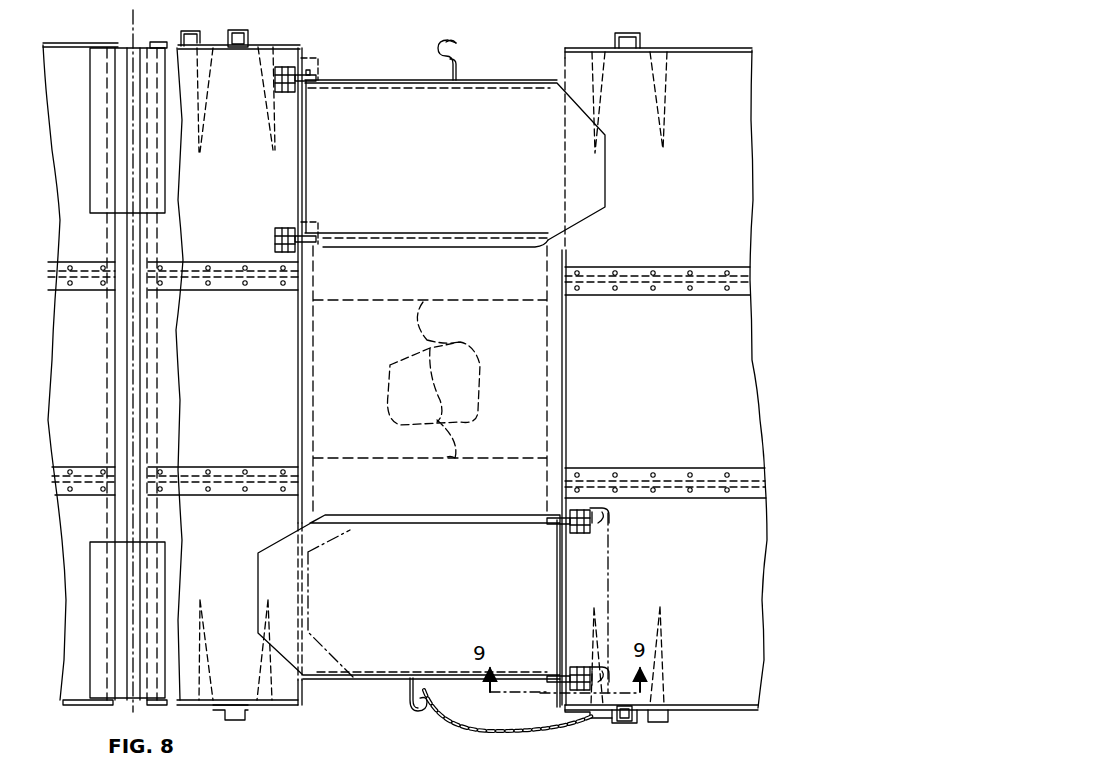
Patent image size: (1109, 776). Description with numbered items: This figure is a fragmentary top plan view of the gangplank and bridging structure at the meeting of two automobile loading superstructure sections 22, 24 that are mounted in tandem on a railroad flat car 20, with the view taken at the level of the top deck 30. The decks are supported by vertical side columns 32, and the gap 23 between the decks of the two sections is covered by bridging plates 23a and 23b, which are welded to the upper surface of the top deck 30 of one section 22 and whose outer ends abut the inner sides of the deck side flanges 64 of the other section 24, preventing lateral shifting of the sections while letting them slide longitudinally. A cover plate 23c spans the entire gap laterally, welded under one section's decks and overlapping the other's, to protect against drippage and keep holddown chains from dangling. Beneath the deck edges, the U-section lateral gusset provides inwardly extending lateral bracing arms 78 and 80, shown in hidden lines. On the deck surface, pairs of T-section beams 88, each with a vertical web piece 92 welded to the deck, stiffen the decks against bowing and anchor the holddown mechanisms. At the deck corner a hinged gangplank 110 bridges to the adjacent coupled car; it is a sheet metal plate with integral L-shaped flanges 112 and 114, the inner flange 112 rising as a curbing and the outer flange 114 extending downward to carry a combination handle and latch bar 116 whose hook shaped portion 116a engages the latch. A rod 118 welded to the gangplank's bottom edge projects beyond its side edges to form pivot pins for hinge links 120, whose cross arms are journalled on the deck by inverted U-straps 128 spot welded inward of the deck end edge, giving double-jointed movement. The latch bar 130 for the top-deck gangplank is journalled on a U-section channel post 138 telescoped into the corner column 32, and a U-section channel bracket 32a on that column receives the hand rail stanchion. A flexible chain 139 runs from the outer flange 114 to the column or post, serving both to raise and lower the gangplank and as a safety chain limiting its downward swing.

The railroad flat car 20 is at (322, 265).
The superstructure section 22 is at (57, 40).
The gap 23 is at (136, 36).
The bridging plate 23a is at (98, 122).
The bridging plate 23b is at (98, 603).
The cover plate 23c is at (120, 412).
The superstructure section 24 is at (163, 40).
The top deck 30 is at (100, 182).
The vertical side column 32 is at (640, 34).
The U-section channel bracket 32a is at (672, 724).
The deck side flange 64 is at (60, 720).
The lateral bracing arm 78 is at (268, 115).
The lateral bracing arm 80 is at (203, 128).
The T-section beam 88 is at (82, 258).
The vertical web piece 92 is at (52, 272).
The gangplank 110 is at (377, 103).
The inner flange 112 is at (450, 240).
The outer flange 114 is at (427, 88).
The combination handle and latch bar 116 is at (458, 75).
The hook shaped portion 116a is at (443, 47).
The rod 118 is at (550, 512).
The hinge link 120 is at (550, 527).
The inverted U-strap 128 is at (604, 514).
The latch bar 130 is at (292, 45).
The U-section channel post 138 is at (246, 36).
The flexible chain 139 is at (445, 727).